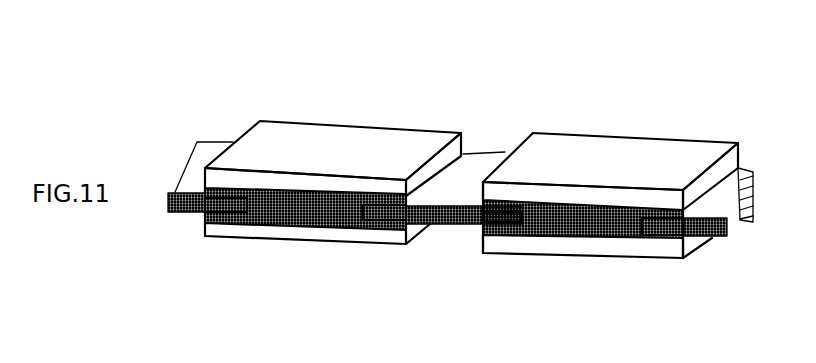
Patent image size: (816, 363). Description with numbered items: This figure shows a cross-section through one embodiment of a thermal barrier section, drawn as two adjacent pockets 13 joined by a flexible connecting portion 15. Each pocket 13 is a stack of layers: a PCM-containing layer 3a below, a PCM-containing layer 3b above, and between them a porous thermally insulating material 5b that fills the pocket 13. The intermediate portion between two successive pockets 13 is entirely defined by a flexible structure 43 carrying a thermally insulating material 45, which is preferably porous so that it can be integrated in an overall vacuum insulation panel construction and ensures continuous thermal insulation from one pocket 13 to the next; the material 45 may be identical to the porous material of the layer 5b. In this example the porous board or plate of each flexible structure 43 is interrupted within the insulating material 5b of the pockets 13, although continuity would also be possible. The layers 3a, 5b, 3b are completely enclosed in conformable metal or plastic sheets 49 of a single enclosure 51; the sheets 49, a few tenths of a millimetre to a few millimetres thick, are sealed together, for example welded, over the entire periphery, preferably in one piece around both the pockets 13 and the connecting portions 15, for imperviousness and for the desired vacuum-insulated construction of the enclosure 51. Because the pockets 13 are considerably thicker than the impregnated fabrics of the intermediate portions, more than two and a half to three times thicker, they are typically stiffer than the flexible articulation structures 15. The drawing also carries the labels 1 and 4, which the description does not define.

The first section marker 1 is at (464, 344).
The second section marker 4 is at (513, 35).
The PCM-containing layer 3a is at (310, 228).
The PCM-containing layer 3b is at (323, 182).
The porous thermally insulating layer 5b is at (357, 220).
The pocket 13 is at (558, 262).
The connecting portion 15 is at (180, 220).
The flexible structure 43 is at (210, 150).
The thermally insulating material 45 is at (177, 190).
The conformable sheet 49 is at (732, 182).
The enclosure 51 is at (292, 135).